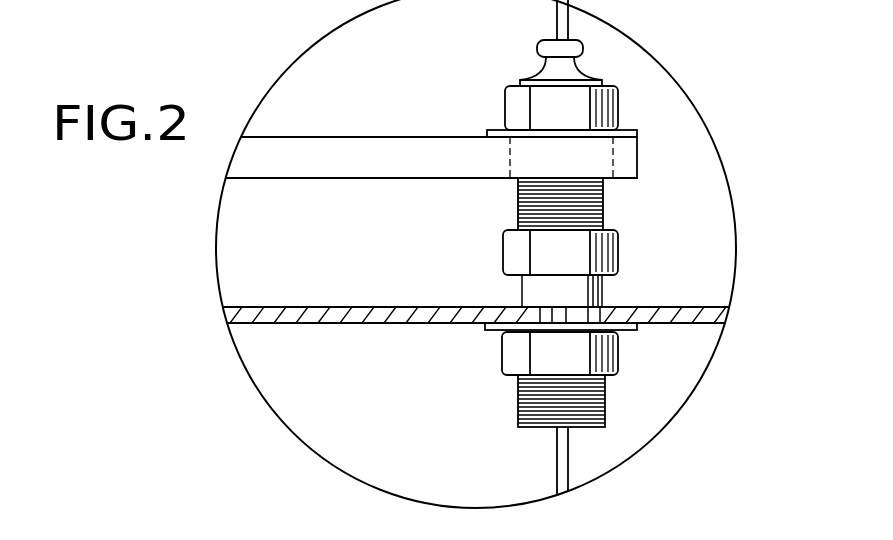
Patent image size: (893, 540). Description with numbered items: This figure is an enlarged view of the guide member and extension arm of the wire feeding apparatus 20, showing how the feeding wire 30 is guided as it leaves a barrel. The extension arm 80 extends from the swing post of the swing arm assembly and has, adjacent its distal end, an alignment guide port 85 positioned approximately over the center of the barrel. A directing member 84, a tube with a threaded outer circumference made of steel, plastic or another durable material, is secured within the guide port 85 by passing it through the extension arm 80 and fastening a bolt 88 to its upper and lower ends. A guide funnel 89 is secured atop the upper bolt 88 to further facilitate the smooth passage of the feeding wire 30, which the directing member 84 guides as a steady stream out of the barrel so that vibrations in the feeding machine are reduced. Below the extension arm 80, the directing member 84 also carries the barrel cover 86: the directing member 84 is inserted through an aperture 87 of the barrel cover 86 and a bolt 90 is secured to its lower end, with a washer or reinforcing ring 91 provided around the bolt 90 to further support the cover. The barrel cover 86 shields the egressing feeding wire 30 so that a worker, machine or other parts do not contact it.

The sensor assembly 20 is at (878, 13).
The feeding wire 30 is at (557, 465).
The extension arm 80 is at (410, 137).
The directing member 84 is at (518, 195).
The guide port 85 is at (510, 154).
The barrel cover 86 is at (363, 307).
The aperture of barrel cover 87 is at (552, 308).
The bolt 88 is at (505, 105).
The guide funnel 89 is at (540, 50).
The bolt 90 is at (618, 355).
The washer or reinforcing ring 91 is at (492, 333).